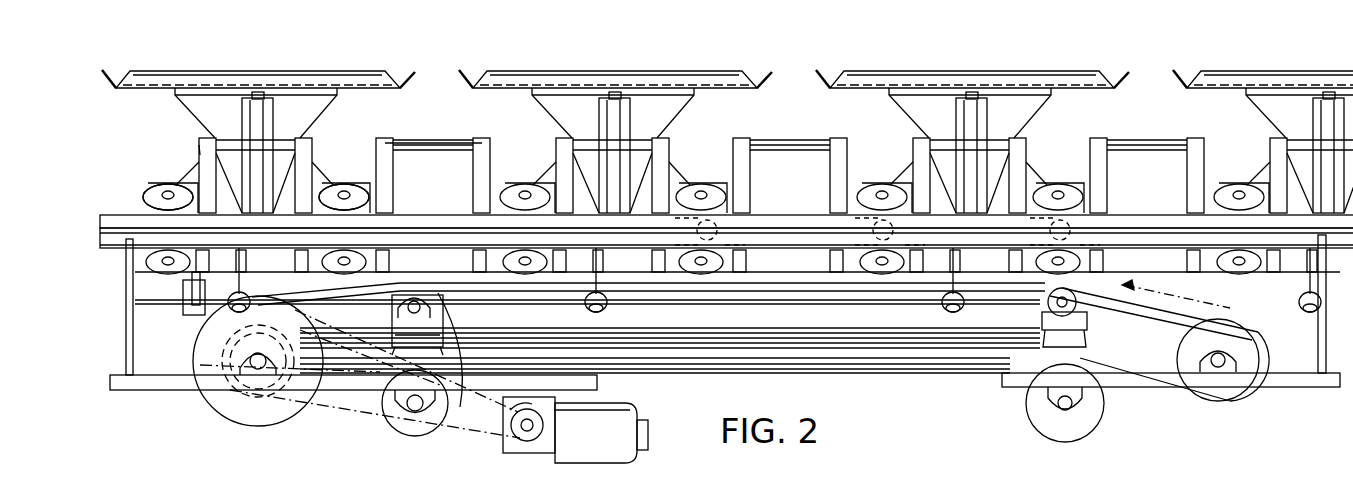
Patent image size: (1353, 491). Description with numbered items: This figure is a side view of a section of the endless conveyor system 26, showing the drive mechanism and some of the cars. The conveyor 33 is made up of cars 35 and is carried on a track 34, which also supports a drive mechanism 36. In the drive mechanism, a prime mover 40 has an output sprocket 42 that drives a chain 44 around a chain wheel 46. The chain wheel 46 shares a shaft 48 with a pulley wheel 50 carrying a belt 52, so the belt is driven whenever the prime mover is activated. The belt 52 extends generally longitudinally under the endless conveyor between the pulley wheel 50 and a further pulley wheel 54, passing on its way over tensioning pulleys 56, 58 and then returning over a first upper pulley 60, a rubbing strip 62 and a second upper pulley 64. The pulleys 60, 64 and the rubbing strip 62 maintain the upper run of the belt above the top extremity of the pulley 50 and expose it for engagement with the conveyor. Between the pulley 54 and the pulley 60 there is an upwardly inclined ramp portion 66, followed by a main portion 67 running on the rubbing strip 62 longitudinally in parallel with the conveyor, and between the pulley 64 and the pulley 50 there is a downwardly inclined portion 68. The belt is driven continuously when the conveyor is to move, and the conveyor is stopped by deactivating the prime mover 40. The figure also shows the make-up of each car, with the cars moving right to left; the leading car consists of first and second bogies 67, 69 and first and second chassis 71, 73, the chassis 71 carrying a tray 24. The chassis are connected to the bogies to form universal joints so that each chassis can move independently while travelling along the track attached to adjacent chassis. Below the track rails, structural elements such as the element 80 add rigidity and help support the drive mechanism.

The tray 24 is at (290, 72).
The endless conveyor system 26 is at (750, 55).
The conveyor 33 is at (118, 193).
The track 34 is at (110, 275).
The car 35 is at (372, 58).
The drive mechanism 36 is at (962, 395).
The prime mover 40 is at (600, 450).
The output sprocket 42 is at (522, 432).
The chain 44 is at (360, 415).
The chain wheel 46 is at (300, 432).
The shaft 48 is at (262, 370).
The pulley wheel 50 is at (222, 400).
The belt 52 is at (262, 430).
The further pulley wheel 54 is at (1245, 385).
The tensioning pulley 56 is at (425, 432).
The tensioning pulley 58 is at (1085, 420).
The first upper pulley 60 is at (1078, 308).
The rubbing strip 62 is at (773, 312).
The second upper pulley 64 is at (456, 395).
The upwardly inclined ramp portion 66 is at (1140, 330).
The main portion of the belt; first bogie 67 is at (175, 185).
The downwardly inclined portion 68 is at (335, 290).
The second bogie 69 is at (335, 185).
The first chassis 71 is at (195, 145).
The second chassis 73 is at (415, 138).
The structural element 80 is at (1320, 388).